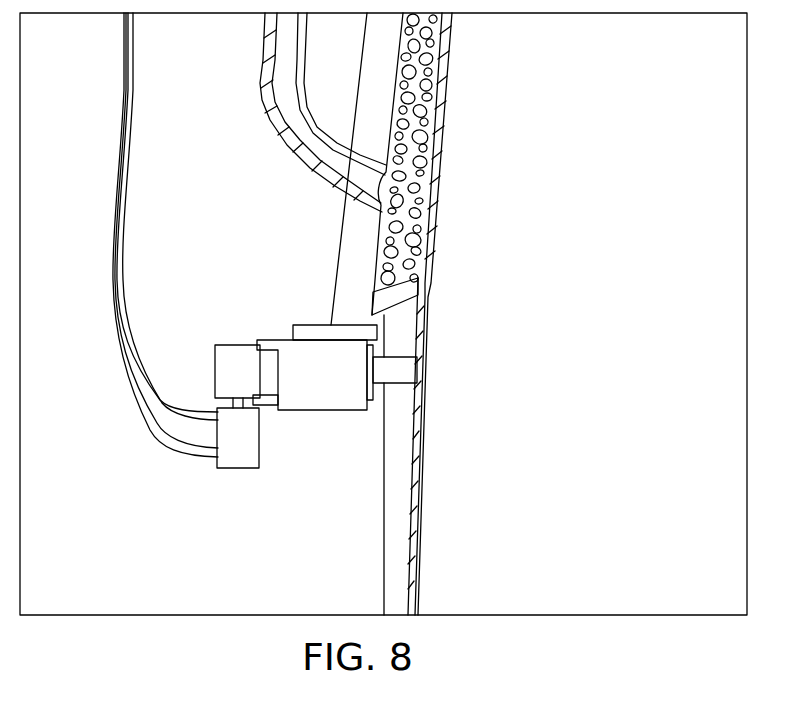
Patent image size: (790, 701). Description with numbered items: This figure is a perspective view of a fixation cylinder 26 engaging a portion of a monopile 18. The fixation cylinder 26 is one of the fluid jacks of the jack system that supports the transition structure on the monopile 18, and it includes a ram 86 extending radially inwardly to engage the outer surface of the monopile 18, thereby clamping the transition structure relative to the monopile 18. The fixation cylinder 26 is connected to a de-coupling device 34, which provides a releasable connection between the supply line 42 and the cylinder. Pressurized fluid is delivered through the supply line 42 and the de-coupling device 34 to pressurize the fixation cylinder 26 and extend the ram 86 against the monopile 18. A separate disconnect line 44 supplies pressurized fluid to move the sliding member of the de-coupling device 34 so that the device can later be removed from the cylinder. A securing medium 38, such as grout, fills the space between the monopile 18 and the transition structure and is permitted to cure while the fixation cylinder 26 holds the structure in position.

The monopile 18 is at (440, 580).
The fixation cylinder 26 is at (317, 422).
The de-coupling device 34 is at (237, 460).
The securing medium 38 is at (377, 248).
The supply line 42 is at (173, 452).
The disconnect line 44 is at (157, 381).
The ram 86 is at (399, 383).